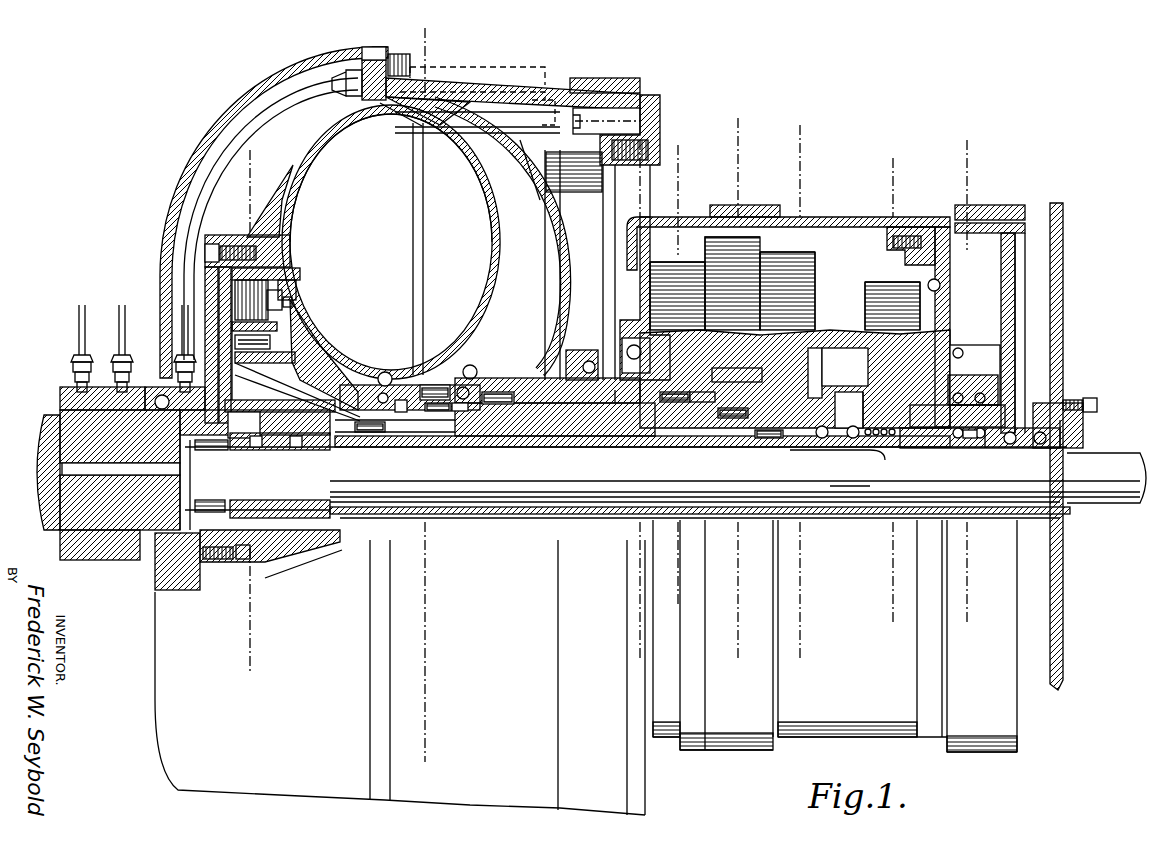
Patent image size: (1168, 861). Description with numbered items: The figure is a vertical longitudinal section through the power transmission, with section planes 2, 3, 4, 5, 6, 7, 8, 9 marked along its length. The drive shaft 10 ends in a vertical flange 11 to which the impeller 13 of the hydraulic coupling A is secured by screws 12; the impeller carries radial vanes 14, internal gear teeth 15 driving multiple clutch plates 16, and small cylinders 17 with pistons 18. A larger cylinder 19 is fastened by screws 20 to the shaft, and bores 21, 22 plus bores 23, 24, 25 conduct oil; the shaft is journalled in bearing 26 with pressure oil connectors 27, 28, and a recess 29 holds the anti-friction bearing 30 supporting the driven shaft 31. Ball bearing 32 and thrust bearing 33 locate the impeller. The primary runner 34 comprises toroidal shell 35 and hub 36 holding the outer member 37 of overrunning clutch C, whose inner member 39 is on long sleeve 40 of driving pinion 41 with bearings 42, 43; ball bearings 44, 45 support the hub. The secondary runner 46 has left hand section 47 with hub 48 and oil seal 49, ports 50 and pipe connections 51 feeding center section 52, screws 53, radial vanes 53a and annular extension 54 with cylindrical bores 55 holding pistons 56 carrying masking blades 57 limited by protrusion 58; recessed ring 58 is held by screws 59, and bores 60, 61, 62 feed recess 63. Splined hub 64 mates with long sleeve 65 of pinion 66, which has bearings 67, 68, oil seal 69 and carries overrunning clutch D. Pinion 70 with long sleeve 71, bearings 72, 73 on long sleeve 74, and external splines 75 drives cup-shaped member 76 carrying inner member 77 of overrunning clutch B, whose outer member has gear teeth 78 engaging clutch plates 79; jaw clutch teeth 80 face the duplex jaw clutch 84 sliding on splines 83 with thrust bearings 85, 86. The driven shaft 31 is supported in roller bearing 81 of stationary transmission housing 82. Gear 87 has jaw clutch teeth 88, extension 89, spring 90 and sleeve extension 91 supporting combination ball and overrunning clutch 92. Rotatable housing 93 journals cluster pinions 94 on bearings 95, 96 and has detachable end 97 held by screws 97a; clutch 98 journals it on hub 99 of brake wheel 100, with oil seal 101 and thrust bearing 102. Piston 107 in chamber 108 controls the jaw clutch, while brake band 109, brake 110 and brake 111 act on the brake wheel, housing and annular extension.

The drive shaft 10 is at (52, 490).
The vertical flange 11 is at (237, 237).
The screws 12 is at (212, 253).
The impeller 13 is at (292, 178).
The radial vanes 14 is at (346, 143).
The internal gear teeth 15 is at (212, 282).
The multiple clutch plates 16 is at (230, 300).
The small cylinders 17 is at (292, 310).
The pistons 18 is at (290, 300).
The larger cylinder 19 is at (330, 548).
The screws 20 is at (258, 562).
The bore 21 is at (255, 426).
The bore 22 is at (236, 318).
The bore 23 is at (80, 432).
The bore 24 is at (72, 470).
The bore 25 is at (182, 458).
The bearing 26 is at (84, 556).
The pressure oil connector 27 is at (75, 360).
The pressure oil connector 28 is at (118, 370).
The recess 29 is at (177, 561).
The anti-friction bearing 30 is at (210, 508).
The driven shaft 31 is at (553, 505).
The radial ball bearing 32 is at (345, 385).
The thrust bearing 33 is at (407, 385).
The runner 34 is at (436, 217).
The toroidal shell 35 is at (480, 188).
The hub portion 36 is at (440, 386).
The outer member 37 is at (428, 378).
The inner member 39 is at (405, 380).
The long sleeve 40 is at (525, 388).
The driving pinion 41 is at (712, 400).
The anti-friction bearing 42 is at (440, 412).
The anti-friction bearing 43 is at (735, 413).
The ball bearing 44 is at (465, 412).
The ball bearing 45 is at (478, 372).
The runner 46 is at (559, 224).
The left hand section 47 is at (212, 120).
The hub 48 is at (153, 392).
The oil seal 49 is at (163, 410).
The ports 50 is at (218, 397).
The pipe connections 51 is at (218, 150).
The center section 52 is at (470, 66).
The screws 53 is at (402, 56).
The radial vanes 53a is at (545, 202).
The annular extension 54 is at (518, 92).
The cylindrical bores 55 is at (622, 110).
The pistons 56 is at (502, 134).
The blades or masking vanes 57 is at (420, 118).
The protrusion / recessed ring 58 is at (660, 122).
The screws 59 is at (655, 147).
The bore 60 is at (504, 72).
The bore 61 is at (554, 80).
The bore 62 is at (603, 128).
The recess 63 is at (660, 108).
The multiple splined hub 64 is at (552, 370).
The long sleeve 65 is at (576, 395).
The pinion 66 is at (656, 392).
The anti-friction bearing 67 is at (500, 404).
The anti-friction bearing 68 is at (673, 395).
The oil seal 69 is at (592, 360).
The pinion 70 is at (816, 392).
The long sleeve portion 71 is at (584, 436).
The anti-friction bearing 72 is at (370, 445).
The anti-friction bearing 73 is at (768, 444).
The long sleeve 74 is at (595, 492).
The external splines 75 is at (398, 432).
The cup-shaped member 76 is at (322, 356).
The inner member 77 is at (272, 350).
The external gear teeth 78 is at (300, 335).
The clutch plates 79 is at (268, 292).
The jaw clutch teeth 80 is at (826, 396).
The roller bearing 81 is at (1084, 420).
The stationary transmission housing 82 is at (1064, 287).
The multiple splines 83 is at (835, 490).
The duplex jaw clutch 84 is at (845, 440).
The thrust bearing 85 is at (822, 440).
The thrust bearing 86 is at (878, 460).
The gear 87 is at (832, 342).
The jaw clutch teeth 88 is at (864, 410).
The extension 89 is at (866, 400).
The spring 90 is at (888, 438).
The sleeve extension 91 is at (980, 446).
The combination ball and overrunning clutch 92 is at (962, 440).
The rotatable housing 93 is at (825, 218).
The cluster pinions 94 is at (806, 262).
The anti-friction bearing 95 is at (624, 270).
The anti-friction bearing 96 is at (942, 285).
The detachable end 97 is at (943, 224).
The screws 97a is at (944, 250).
The combination ball and overrunning clutch 98 is at (962, 386).
The hub 99 is at (1012, 402).
The brake wheel 100 is at (1010, 270).
The oil seal 101 is at (1010, 444).
The thrust bearing 102 is at (1045, 444).
The piston 107 is at (284, 500).
The chamber 108 is at (250, 553).
The brake band 109 is at (997, 207).
The brake 110 is at (763, 205).
The brake 111 is at (605, 78).
The hydraulic coupling A is at (377, 36).
The overrunning clutch B is at (270, 340).
The overrunning clutch C is at (462, 372).
The overrunning clutch D is at (625, 395).
The section line 2 is at (256, 668).
The section line 3 is at (431, 760).
The section line 4 is at (646, 656).
The section line 5 is at (684, 603).
The section line 6 is at (744, 658).
The section line 7 is at (806, 658).
The section line 8 is at (899, 623).
The section line 9 is at (973, 623).